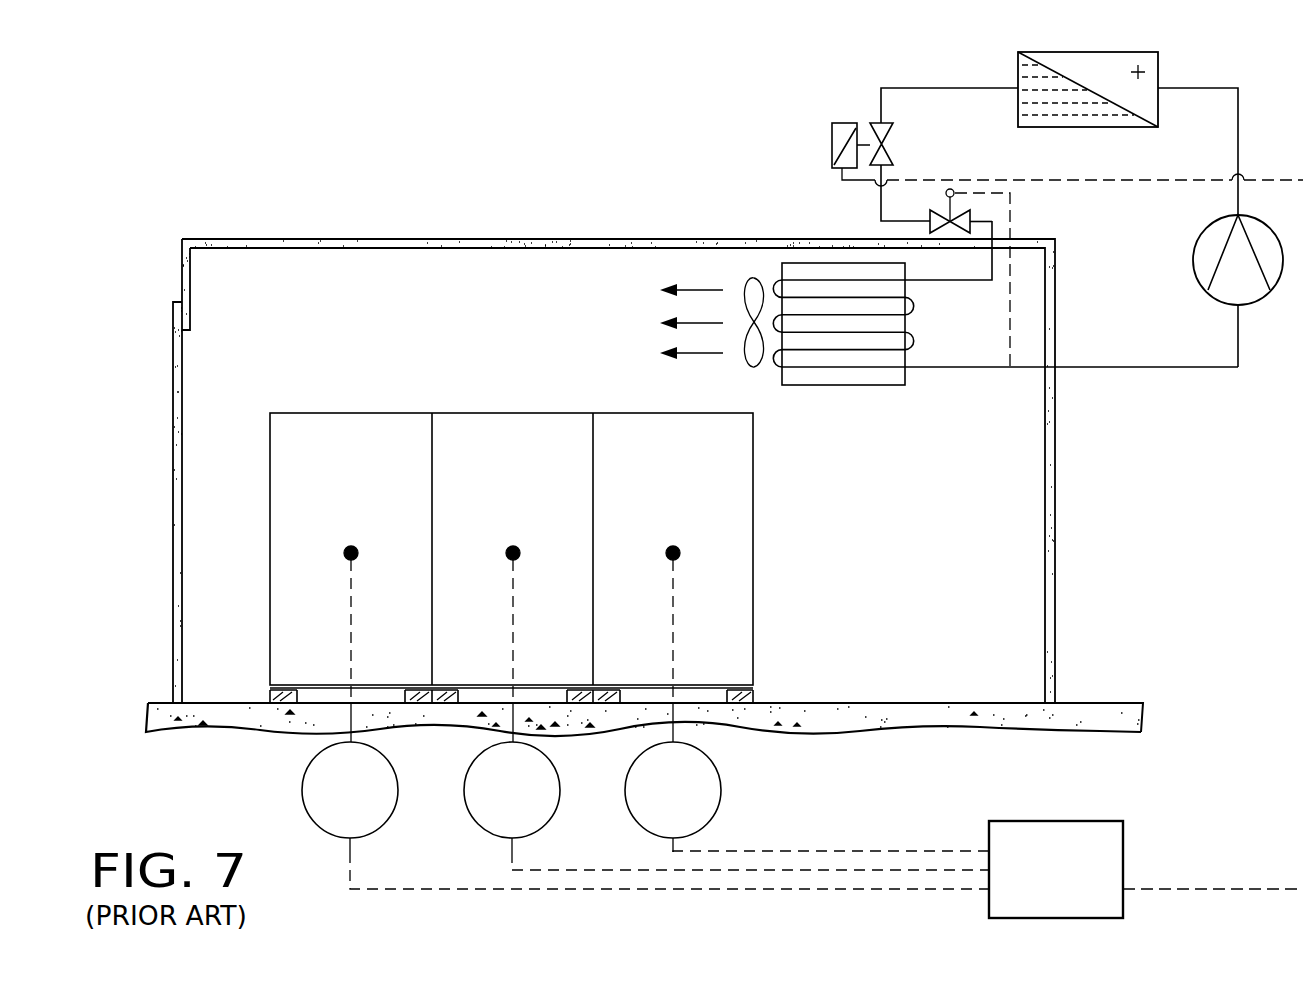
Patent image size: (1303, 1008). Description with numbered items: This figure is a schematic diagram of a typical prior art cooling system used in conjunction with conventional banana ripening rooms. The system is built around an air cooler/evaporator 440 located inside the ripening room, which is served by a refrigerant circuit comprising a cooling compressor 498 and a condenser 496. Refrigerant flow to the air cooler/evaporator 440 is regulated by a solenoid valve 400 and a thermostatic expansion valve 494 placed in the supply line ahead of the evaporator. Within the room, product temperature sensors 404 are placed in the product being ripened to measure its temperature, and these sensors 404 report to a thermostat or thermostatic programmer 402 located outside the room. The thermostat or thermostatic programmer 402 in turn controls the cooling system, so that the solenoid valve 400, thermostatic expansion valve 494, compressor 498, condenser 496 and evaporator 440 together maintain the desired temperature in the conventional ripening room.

The solenoid valve 400 is at (878, 124).
The thermostat or thermostatic programmer 402 is at (1069, 837).
The product temperature sensors 404 is at (370, 820).
The air cooler/evaporator 440 is at (822, 288).
The thermostatic expansion valve 494 is at (928, 205).
The condenser 496 is at (1048, 122).
The cooling compressor 498 is at (1224, 279).